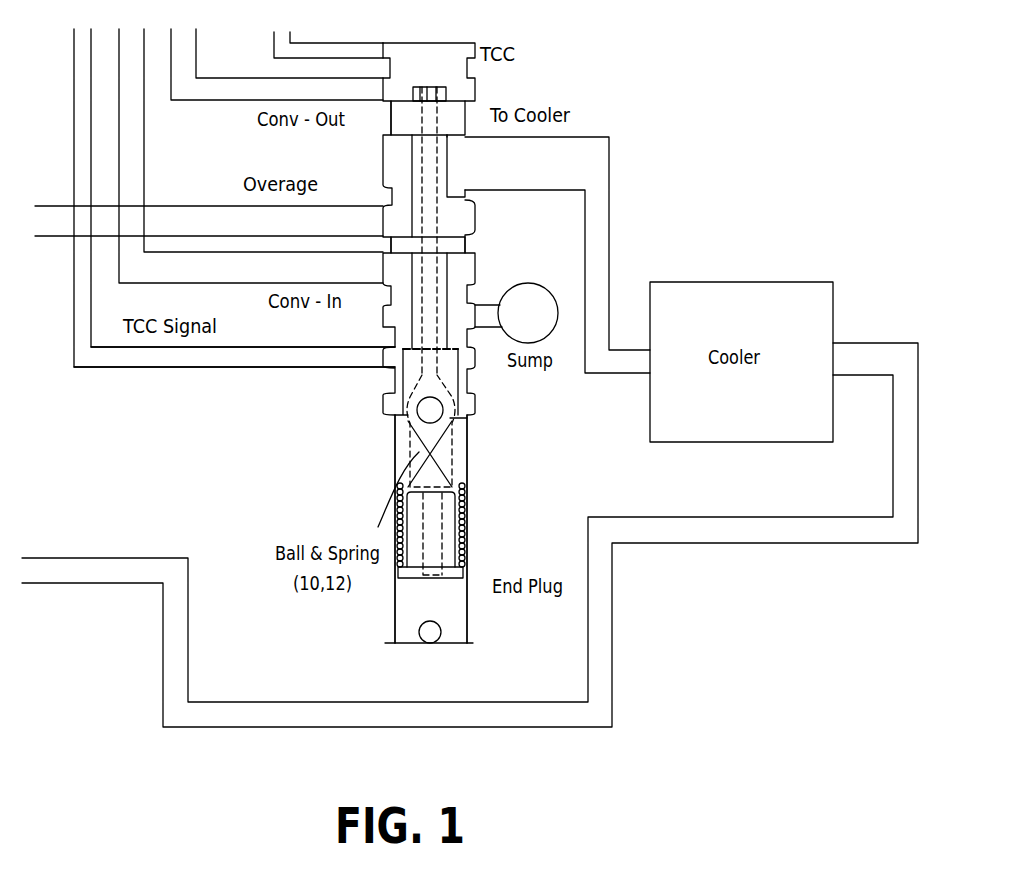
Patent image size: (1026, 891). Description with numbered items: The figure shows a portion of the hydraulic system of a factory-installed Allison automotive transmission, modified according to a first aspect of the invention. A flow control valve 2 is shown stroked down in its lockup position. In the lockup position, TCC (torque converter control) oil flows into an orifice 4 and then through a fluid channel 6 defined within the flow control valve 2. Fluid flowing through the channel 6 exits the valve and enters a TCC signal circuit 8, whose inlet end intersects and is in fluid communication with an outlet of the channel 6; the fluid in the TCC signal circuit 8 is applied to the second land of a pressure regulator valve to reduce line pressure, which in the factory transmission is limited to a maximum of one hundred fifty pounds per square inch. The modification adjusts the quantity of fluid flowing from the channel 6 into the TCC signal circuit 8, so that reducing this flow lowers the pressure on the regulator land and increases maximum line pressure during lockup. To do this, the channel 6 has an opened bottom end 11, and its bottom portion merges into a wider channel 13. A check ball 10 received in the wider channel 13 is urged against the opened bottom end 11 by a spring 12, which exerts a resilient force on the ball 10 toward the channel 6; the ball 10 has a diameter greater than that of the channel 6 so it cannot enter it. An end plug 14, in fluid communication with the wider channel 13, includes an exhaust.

The flow control valve 2 is at (467, 455).
The orifice 4 is at (442, 93).
The fluid channel 6 is at (430, 213).
The TCC signal circuit 8 is at (245, 358).
The check ball 10 is at (408, 413).
The opened bottom end 11 is at (452, 416).
The spring 12 is at (413, 432).
The wider channel 13 is at (462, 432).
The end plug 14 is at (465, 537).